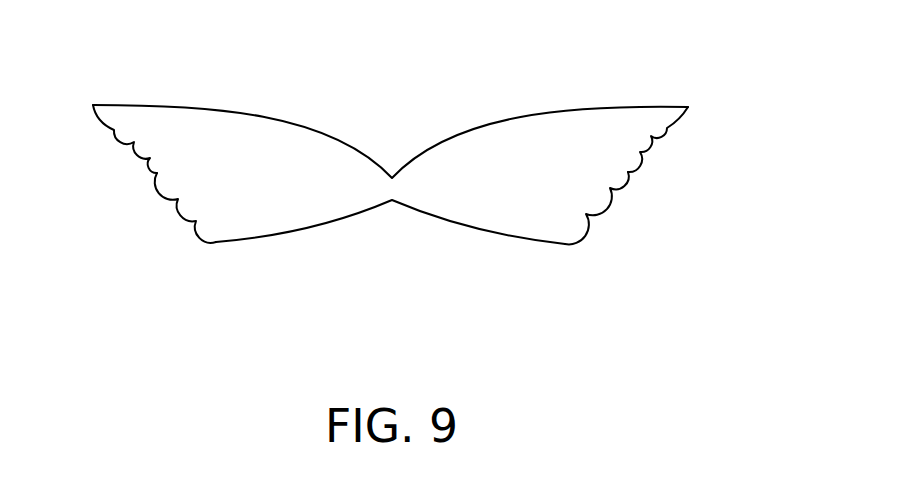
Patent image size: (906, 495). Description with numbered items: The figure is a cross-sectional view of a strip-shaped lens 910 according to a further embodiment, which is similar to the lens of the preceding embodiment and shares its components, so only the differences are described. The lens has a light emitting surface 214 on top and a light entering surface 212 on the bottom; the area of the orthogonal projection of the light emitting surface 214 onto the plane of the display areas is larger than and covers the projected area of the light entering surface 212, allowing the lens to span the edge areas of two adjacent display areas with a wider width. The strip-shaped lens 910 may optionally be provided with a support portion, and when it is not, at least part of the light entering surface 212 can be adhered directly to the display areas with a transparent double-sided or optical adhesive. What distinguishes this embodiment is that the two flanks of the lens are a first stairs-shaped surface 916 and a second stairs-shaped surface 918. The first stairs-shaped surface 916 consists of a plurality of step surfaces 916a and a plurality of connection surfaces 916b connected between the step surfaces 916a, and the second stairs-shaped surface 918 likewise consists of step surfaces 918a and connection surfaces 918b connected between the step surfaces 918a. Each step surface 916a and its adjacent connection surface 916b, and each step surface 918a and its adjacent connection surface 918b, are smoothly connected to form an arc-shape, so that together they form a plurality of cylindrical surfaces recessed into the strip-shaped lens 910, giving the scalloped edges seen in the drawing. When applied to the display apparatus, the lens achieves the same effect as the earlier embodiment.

The strip-shaped lens 910 is at (407, 188).
The light emitting surface 214 is at (437, 145).
The light entering surface 212 is at (447, 222).
The first stairs-shaped surface 916 is at (110, 174).
The step surfaces 916a is at (163, 177).
The connection surfaces 916b is at (150, 162).
The second stairs-shaped surface 918 is at (671, 175).
The step surfaces 918a is at (621, 177).
The connection surfaces 918b is at (651, 139).